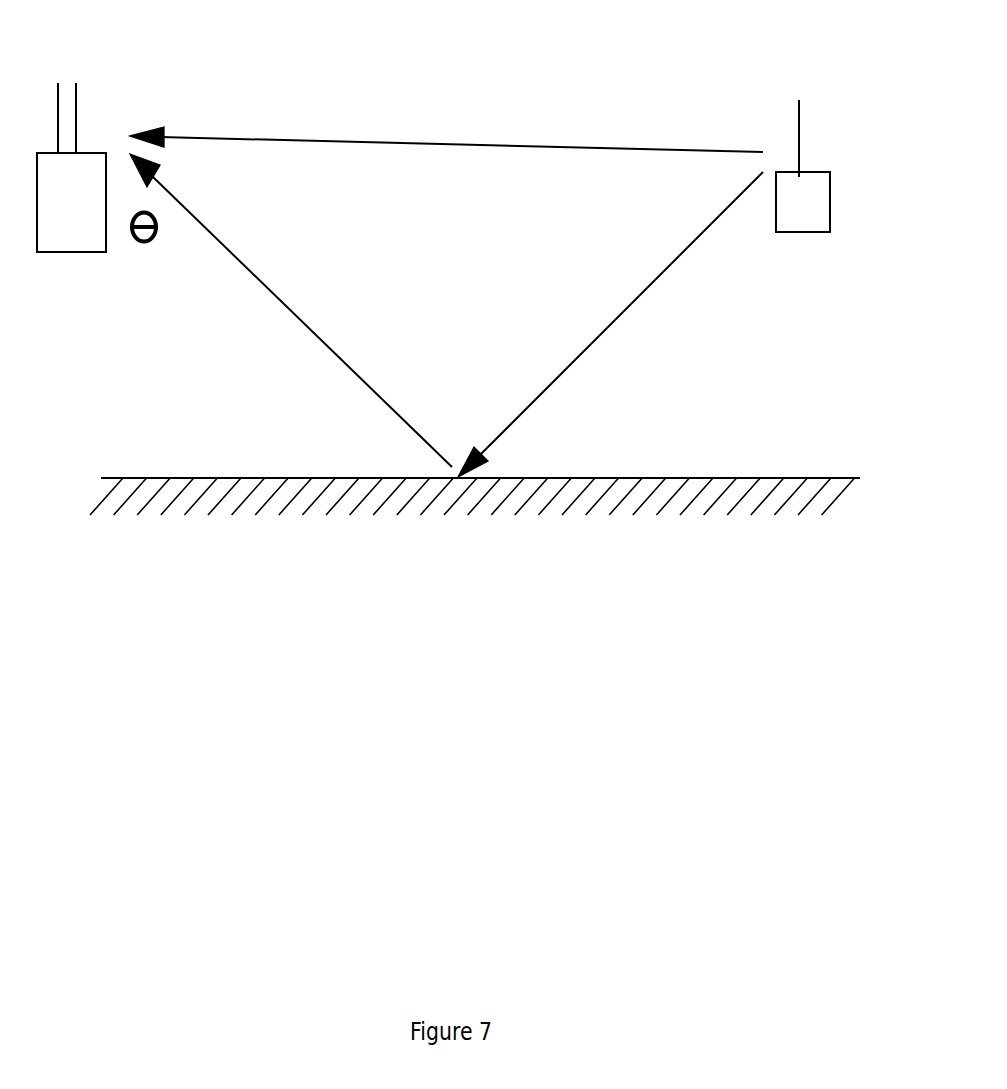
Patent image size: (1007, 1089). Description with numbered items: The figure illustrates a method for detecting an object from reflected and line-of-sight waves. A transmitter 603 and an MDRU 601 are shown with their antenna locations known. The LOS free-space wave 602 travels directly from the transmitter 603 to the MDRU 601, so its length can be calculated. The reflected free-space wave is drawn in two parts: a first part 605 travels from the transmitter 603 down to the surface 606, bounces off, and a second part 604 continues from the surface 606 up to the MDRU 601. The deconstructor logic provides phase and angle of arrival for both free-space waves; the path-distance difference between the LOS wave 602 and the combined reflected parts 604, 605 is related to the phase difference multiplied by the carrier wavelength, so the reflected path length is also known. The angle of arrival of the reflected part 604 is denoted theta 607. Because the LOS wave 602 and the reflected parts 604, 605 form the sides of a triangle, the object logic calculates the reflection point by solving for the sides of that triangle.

The MDRU 601 is at (72, 263).
The LOS free-space wave 602 is at (327, 135).
The transmitter 603 is at (823, 240).
The reflected free-space wave part 604 is at (282, 292).
The reflected free-space wave part 605 is at (587, 357).
The surface 606 is at (150, 478).
The theta 607 is at (167, 243).